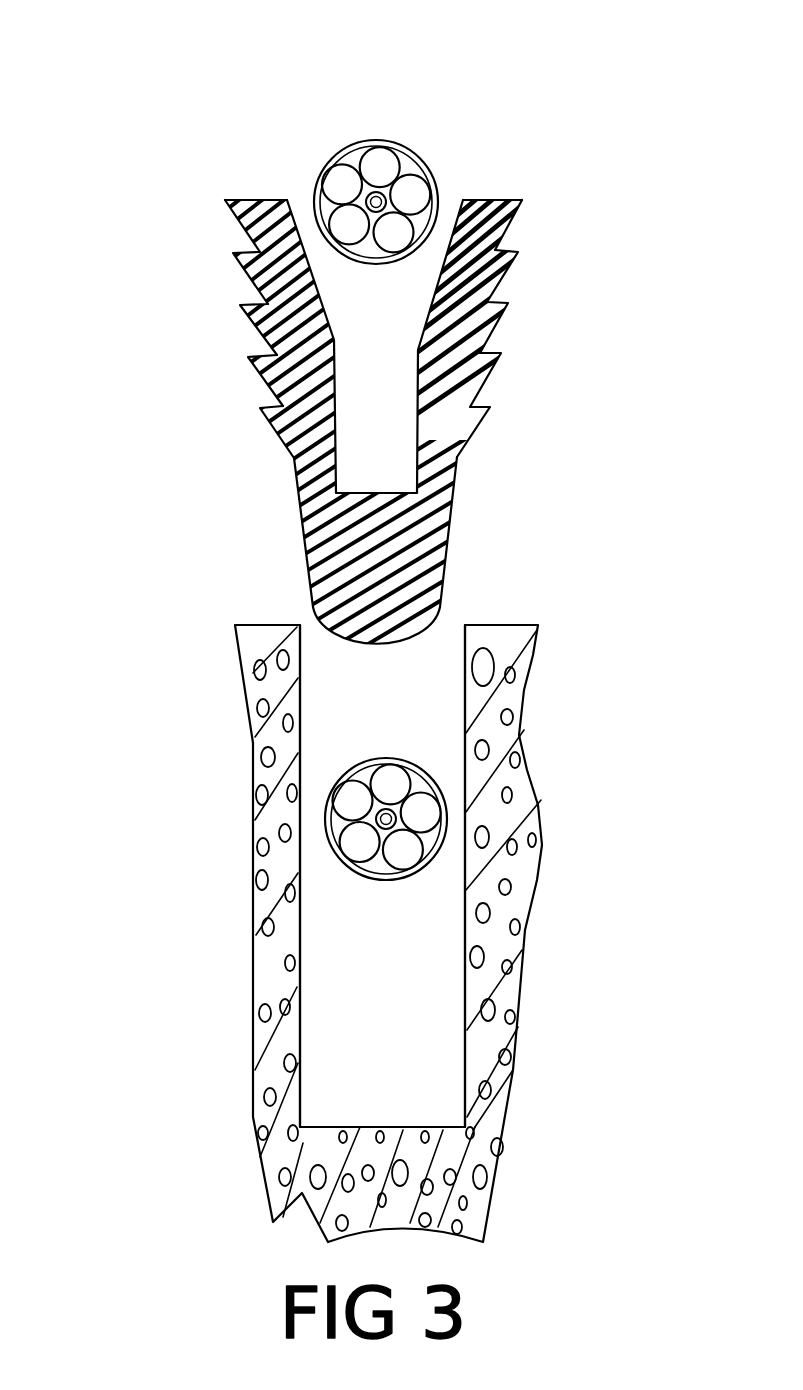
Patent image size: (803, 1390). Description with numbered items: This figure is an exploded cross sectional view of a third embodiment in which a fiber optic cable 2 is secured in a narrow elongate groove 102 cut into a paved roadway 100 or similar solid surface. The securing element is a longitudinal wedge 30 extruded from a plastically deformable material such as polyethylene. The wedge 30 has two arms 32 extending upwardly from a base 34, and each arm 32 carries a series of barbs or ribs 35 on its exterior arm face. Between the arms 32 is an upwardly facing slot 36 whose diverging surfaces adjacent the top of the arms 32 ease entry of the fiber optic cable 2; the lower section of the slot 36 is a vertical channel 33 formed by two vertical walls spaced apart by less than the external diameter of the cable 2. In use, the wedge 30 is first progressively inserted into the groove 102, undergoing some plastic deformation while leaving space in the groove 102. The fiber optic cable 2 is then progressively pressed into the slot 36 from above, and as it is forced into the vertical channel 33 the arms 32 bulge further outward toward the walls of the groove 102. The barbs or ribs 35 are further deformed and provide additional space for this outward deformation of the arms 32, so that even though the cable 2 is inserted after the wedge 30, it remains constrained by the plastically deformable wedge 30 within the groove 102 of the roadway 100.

The fiber optic cable 2 is at (318, 145).
The longitudinal wedge 30 is at (326, 372).
The arms 32 is at (293, 457).
The vertical channel 33 is at (405, 472).
The base 34 is at (363, 565).
The barbs or ribs 35 is at (277, 407).
The upwardly facing slot 36 is at (470, 179).
The paved roadway 100 is at (303, 933).
The groove 102 is at (402, 702).